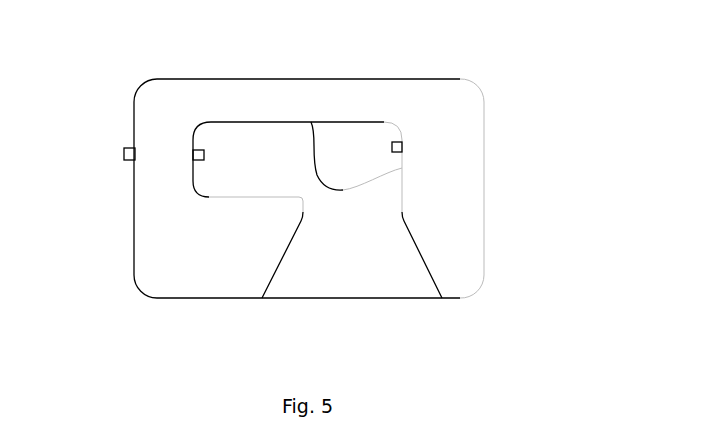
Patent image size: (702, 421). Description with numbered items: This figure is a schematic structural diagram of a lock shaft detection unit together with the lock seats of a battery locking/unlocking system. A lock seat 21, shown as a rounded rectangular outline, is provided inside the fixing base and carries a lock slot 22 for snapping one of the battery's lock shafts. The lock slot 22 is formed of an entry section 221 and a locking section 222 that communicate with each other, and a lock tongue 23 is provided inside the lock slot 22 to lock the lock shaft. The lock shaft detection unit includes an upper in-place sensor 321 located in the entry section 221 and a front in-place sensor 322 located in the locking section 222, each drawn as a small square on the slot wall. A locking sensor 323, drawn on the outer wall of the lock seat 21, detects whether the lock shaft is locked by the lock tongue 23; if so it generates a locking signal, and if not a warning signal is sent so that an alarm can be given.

The lock seat 21 is at (160, 238).
The lock slot 22 is at (343, 199).
The entry section 221 is at (345, 258).
The locking section 222 is at (245, 138).
The lock tongue 23 is at (332, 167).
The upper in-place sensor 321 is at (397, 147).
The front in-place sensor 322 is at (198, 156).
The locking sensor 323 is at (129, 155).